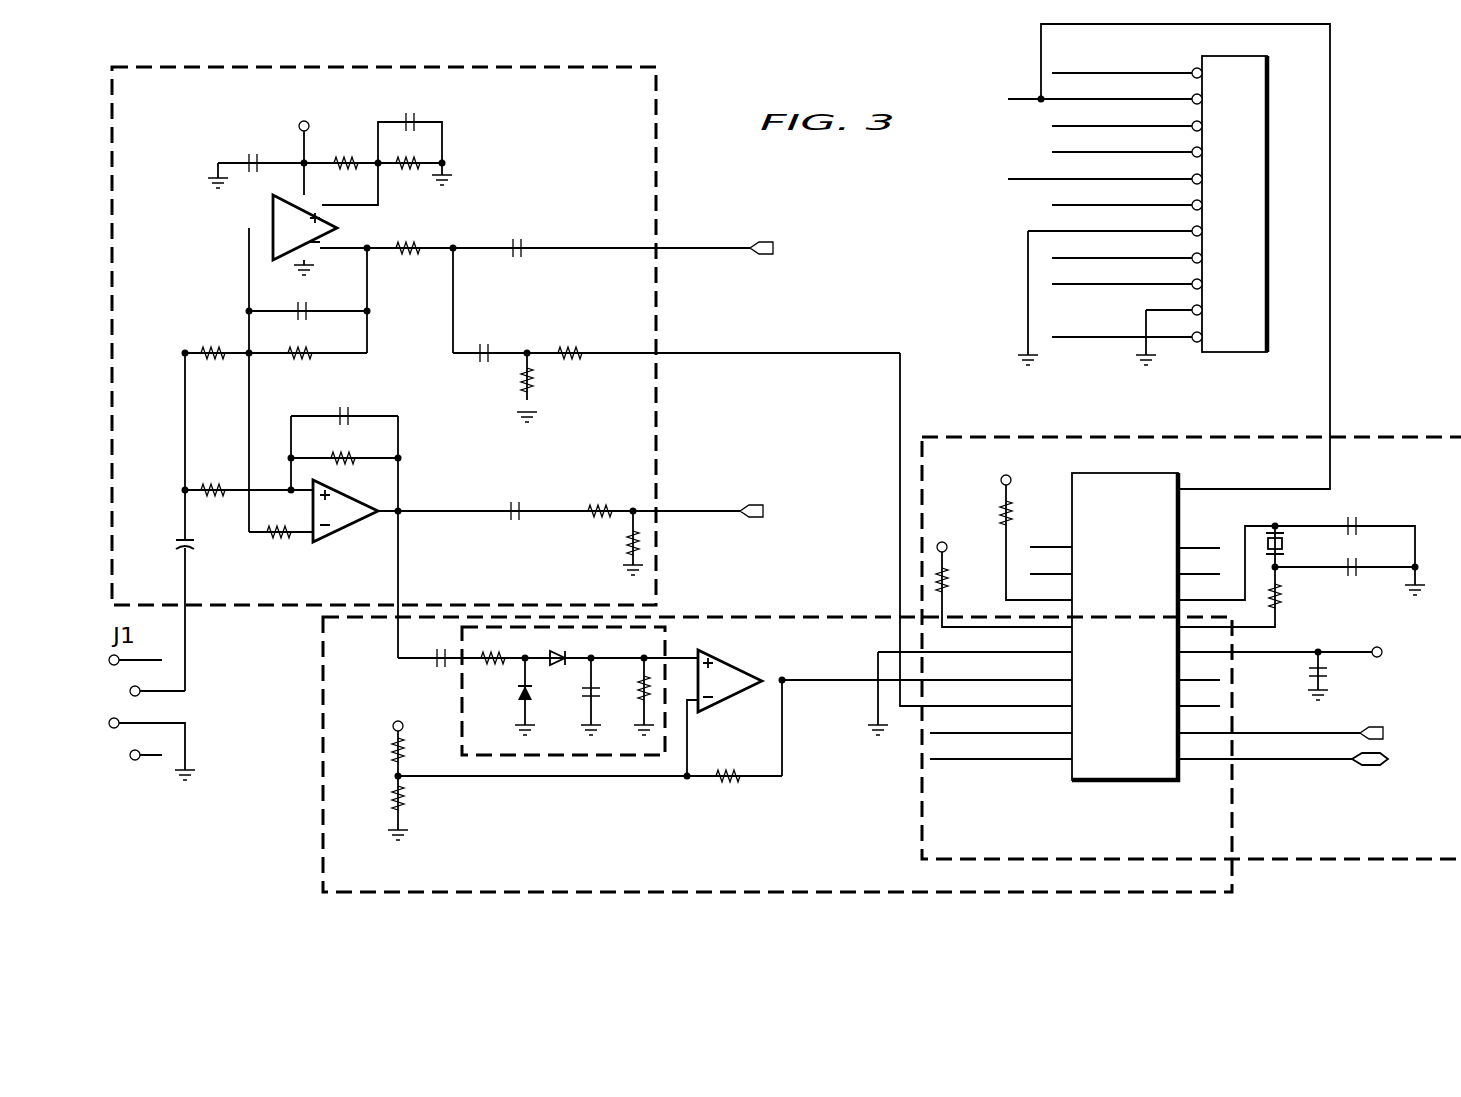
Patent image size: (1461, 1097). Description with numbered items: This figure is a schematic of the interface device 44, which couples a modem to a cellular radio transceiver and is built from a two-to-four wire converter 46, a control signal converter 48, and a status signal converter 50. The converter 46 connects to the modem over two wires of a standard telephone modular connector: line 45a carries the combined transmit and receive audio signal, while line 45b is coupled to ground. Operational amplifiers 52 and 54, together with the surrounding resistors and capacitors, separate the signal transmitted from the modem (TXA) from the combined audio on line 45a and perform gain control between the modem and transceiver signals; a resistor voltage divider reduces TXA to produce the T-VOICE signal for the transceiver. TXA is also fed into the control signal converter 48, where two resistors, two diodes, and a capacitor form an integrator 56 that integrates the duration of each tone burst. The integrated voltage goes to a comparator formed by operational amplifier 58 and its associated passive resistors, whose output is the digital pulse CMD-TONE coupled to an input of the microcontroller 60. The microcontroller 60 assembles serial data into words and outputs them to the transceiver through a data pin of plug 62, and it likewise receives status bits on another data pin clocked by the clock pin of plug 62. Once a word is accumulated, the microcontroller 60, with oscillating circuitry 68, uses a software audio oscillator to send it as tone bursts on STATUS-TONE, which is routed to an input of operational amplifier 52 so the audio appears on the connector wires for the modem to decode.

The interface device 44 is at (1228, 218).
The line 45a is at (187, 683).
The line 45b is at (187, 733).
The 2-to-4 wire converter 46 is at (592, 386).
The control signal converter 48 is at (777, 754).
The status signal converter 50 is at (1191, 441).
The operational amplifier 52 is at (283, 237).
The operational amplifier 54 is at (360, 523).
The integrator 56 is at (501, 741).
The operational amplifier 58 is at (745, 693).
The microcontroller 60 is at (1142, 522).
The plug 62 is at (1268, 185).
The oscillating circuitry 68 is at (1384, 484).